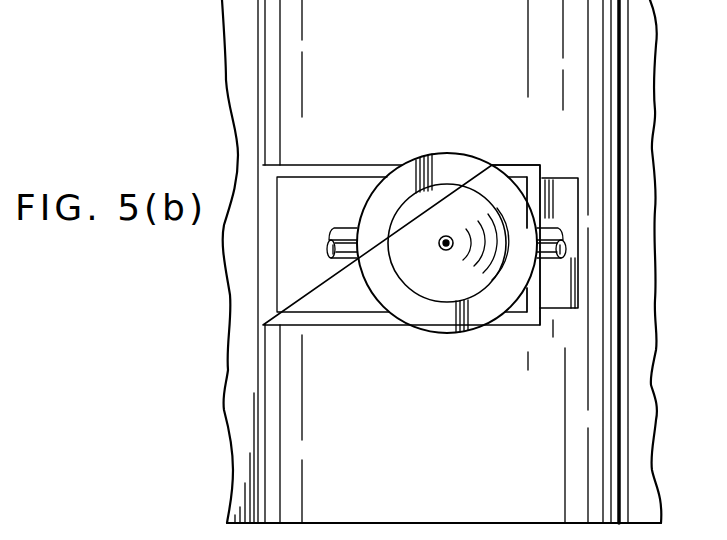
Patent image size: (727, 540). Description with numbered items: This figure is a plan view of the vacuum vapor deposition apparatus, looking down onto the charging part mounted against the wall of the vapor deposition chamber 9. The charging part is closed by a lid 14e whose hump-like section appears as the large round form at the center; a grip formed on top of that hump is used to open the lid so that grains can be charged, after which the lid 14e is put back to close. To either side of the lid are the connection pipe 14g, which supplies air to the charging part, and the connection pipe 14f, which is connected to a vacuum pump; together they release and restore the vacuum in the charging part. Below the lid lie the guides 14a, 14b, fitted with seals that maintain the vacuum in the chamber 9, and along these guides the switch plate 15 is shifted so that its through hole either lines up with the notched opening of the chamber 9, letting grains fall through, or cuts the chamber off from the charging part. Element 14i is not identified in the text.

The vapor deposition chamber 9 is at (273, 86).
The guide 14a is at (315, 197).
The guide 14b is at (512, 180).
The lid 14e is at (450, 160).
The center pin 14i is at (446, 236).
The connection pipe 14g is at (352, 259).
The connection pipe 14f is at (551, 260).
The switch plate 15 is at (565, 208).